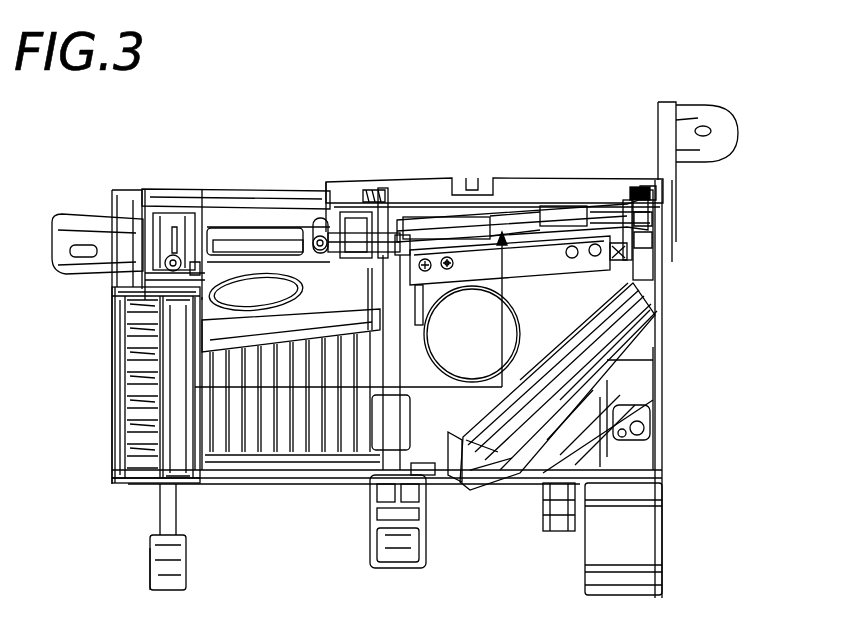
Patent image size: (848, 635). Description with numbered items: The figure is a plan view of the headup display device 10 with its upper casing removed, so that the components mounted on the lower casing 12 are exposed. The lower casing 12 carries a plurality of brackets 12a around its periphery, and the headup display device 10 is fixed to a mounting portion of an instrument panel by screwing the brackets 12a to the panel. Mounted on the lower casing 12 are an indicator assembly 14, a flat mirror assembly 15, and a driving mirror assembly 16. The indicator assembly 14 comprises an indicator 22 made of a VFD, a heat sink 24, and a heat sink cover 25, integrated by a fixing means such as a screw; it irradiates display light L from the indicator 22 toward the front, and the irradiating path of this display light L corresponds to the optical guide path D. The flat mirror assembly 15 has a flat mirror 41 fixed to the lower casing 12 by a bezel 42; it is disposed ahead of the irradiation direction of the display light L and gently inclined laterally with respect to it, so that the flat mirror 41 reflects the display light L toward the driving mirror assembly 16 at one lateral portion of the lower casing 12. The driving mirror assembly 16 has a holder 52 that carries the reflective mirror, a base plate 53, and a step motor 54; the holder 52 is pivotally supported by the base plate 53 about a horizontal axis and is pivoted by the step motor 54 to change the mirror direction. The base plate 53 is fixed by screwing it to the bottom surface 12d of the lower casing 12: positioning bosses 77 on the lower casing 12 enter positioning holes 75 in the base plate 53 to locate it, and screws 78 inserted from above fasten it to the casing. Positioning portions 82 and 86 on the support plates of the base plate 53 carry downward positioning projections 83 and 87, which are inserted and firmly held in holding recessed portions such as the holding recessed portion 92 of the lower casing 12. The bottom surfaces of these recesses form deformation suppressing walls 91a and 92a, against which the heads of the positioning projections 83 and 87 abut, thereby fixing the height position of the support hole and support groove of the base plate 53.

The headup display device 10 is at (490, 130).
The lower casing 12 is at (662, 357).
The bracket 12a is at (62, 212).
The bottom surface 12d is at (548, 308).
The indicator assembly 14 is at (115, 465).
The flat mirror assembly 15 is at (536, 455).
The driving mirror assembly 16 is at (528, 198).
The indicator 22 is at (173, 430).
The heat sink 24 is at (127, 393).
The heat sink cover 25 is at (113, 338).
The flat mirror 41 is at (636, 185).
The bezel 42 is at (516, 462).
The holder 52 is at (568, 205).
The base plate 53 is at (642, 252).
The step motor 54 is at (350, 405).
The positioning hole 75 is at (425, 258).
The positioning boss 77 is at (411, 236).
The screw 78 is at (447, 257).
The positioning portion 82 is at (648, 215).
The positioning projection 83 is at (653, 195).
The positioning portion 86 is at (323, 193).
The positioning projection 87 is at (378, 200).
The deformation suppressing wall 91a is at (646, 185).
The holding recessed portion 92 is at (366, 203).
The deformation suppressing wall 92a is at (360, 196).
The optical guide path D is at (290, 400).
The display light L is at (430, 475).